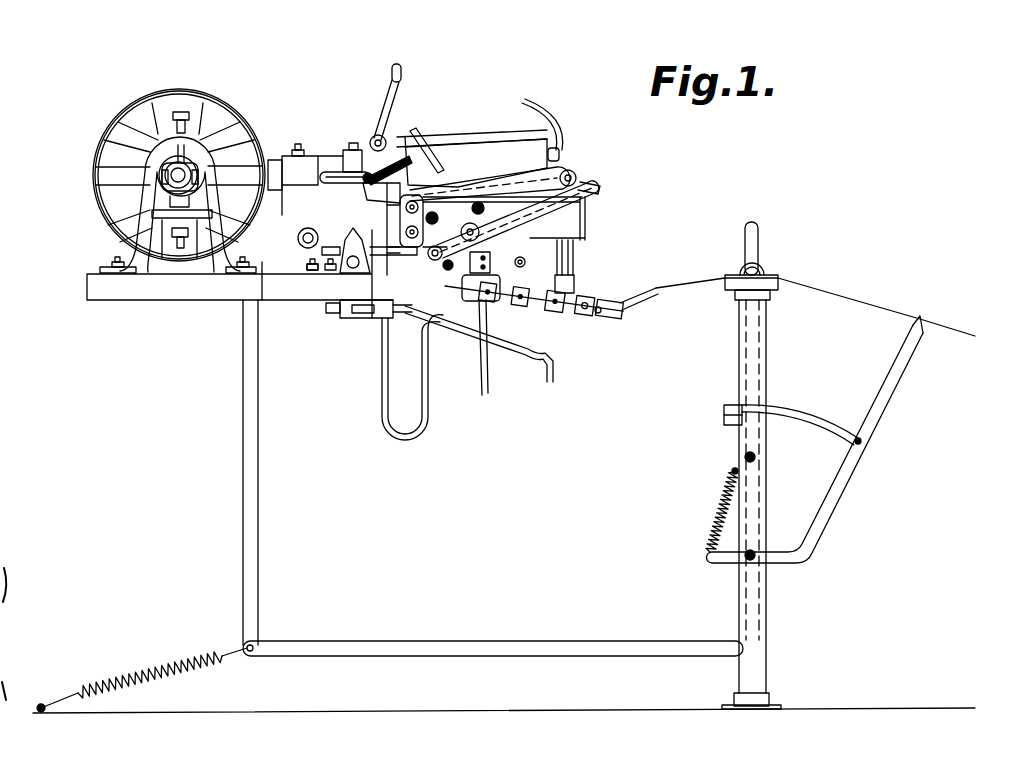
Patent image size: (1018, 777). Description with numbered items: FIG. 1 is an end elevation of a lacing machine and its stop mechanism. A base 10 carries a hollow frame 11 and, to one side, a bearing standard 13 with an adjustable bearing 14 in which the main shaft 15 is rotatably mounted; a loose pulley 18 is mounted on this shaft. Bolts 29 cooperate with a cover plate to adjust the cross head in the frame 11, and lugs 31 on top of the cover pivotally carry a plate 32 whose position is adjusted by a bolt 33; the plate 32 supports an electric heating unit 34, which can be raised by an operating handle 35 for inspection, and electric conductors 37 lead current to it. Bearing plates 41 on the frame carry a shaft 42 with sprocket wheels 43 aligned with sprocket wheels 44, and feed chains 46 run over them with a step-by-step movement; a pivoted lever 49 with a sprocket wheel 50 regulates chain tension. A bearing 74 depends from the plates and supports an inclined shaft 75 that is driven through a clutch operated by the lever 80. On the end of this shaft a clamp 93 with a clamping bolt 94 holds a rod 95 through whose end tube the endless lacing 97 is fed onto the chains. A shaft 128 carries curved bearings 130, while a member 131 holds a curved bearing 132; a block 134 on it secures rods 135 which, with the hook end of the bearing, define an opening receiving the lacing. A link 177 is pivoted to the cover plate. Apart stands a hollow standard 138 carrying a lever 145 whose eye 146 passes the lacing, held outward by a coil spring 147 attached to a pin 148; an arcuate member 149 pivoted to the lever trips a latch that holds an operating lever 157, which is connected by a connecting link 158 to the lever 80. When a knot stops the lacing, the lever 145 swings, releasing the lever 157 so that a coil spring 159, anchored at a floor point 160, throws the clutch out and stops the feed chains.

The base 10 is at (128, 300).
The hollow frame 11 is at (262, 255).
The bearing standard 13 is at (148, 158).
The adjustable bearing 14 is at (165, 188).
The shaft 15 is at (190, 200).
The loose pulley 18 is at (210, 110).
The bolts 29 is at (299, 150).
The lugs or ears 31 is at (371, 138).
The plate 32 is at (469, 145).
The bolt 33 is at (401, 156).
The electric heating unit 34 is at (503, 165).
The operating handle 35 is at (402, 70).
The electric conductors 37 is at (426, 148).
The bearing plates 41 is at (560, 215).
The shaft 42 is at (582, 172).
The sprocket wheel 43 is at (558, 175).
The sprocket wheels 44 is at (387, 208).
The feed chains 46 is at (565, 233).
The pivoted lever 49 is at (442, 292).
The sprocket wheel 50 is at (512, 225).
The bearing 74 is at (485, 357).
The shaft 75 is at (486, 302).
The operating lever 80 is at (258, 490).
The clamp 93 is at (594, 300).
The clamping bolt 94 is at (622, 305).
The rod or tube 95 is at (598, 314).
The endless lacing 97 is at (870, 302).
The shaft 128 is at (368, 268).
The curved bearing or rod 130 is at (600, 190).
The member 131 is at (333, 313).
The curved bearing 132 is at (553, 360).
The block 134 is at (372, 318).
The rod 135 is at (382, 415).
The hollow standard 138 is at (768, 627).
The lever 145 is at (797, 562).
The hole or eye 146 is at (924, 320).
The coil spring 147 is at (710, 537).
The pin 148 is at (735, 468).
The arcuate member 149 is at (822, 418).
The operating lever 157 is at (756, 224).
The connecting link 158 is at (470, 645).
The coil spring 159 is at (128, 662).
The point 160 is at (45, 708).
The link 177 is at (316, 272).